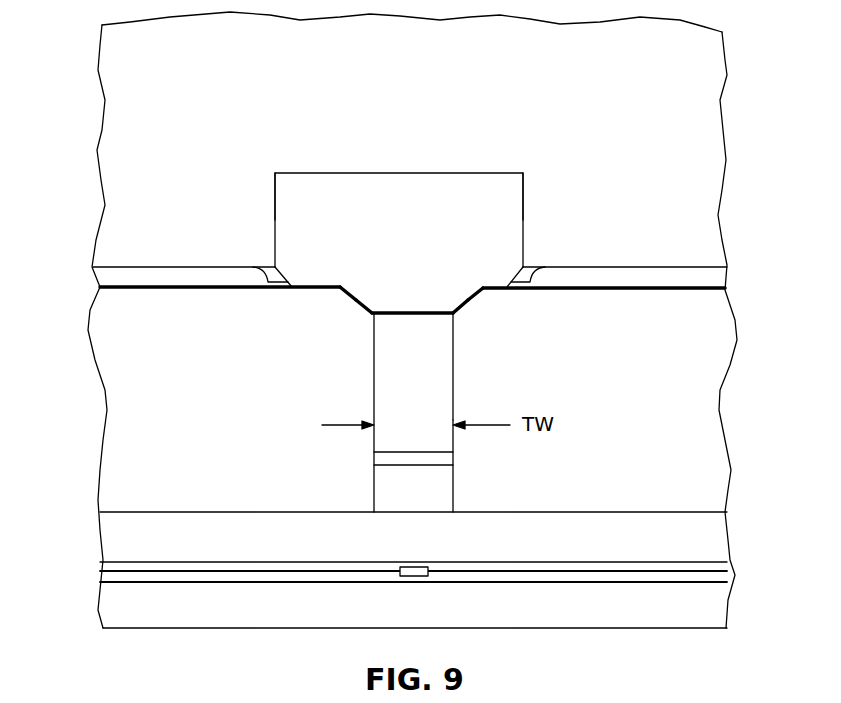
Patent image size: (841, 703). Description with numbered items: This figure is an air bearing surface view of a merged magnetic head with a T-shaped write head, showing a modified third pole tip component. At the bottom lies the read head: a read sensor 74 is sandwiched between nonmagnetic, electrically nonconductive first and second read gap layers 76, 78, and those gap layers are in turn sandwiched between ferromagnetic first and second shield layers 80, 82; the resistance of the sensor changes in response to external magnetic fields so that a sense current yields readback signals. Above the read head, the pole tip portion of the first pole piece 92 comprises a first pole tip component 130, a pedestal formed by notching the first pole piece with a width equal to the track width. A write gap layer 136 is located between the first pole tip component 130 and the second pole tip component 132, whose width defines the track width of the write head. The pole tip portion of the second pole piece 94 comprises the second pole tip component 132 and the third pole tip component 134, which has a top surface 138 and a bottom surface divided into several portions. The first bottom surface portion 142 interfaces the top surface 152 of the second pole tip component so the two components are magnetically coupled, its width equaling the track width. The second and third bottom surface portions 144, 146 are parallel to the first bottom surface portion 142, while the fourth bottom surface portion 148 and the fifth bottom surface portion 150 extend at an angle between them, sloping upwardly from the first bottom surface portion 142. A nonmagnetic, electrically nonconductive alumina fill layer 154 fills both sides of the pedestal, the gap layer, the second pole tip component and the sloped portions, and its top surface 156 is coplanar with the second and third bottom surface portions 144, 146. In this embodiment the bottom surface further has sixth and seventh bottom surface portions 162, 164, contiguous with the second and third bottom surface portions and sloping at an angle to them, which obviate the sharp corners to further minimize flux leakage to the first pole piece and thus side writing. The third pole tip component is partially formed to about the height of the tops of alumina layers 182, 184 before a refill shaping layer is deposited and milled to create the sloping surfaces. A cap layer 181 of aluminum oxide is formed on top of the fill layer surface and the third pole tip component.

The cap layer 181 is at (529, 72).
The fill layer 154 is at (115, 392).
The third pole tip component 134 is at (387, 187).
The top surface 138 is at (337, 172).
The second pole piece 94 is at (436, 170).
The top surface of fill layer 156 is at (140, 287).
The sixth bottom surface portion 162 is at (258, 280).
The seventh bottom surface portion 164 is at (540, 270).
The alumina layer 182 is at (173, 281).
The alumina layer 184 is at (637, 283).
The second bottom surface portion 144 is at (320, 303).
The fourth bottom surface portion 148 is at (360, 310).
The top surface of second pole tip component 152 is at (398, 312).
The fifth bottom surface portion 150 is at (468, 307).
The third bottom surface portion 146 is at (490, 292).
The second pole tip component 132 is at (380, 388).
The first bottom surface portion 142 is at (420, 315).
The first pole tip component 130 is at (442, 489).
The write gap layer 136 is at (375, 455).
The first pole piece 92 is at (232, 510).
The second shield layer 82 is at (252, 547).
The second read gap layer 78 is at (632, 568).
The first read gap layer 76 is at (583, 578).
The read sensor 74 is at (412, 576).
The first shield layer 80 is at (183, 613).